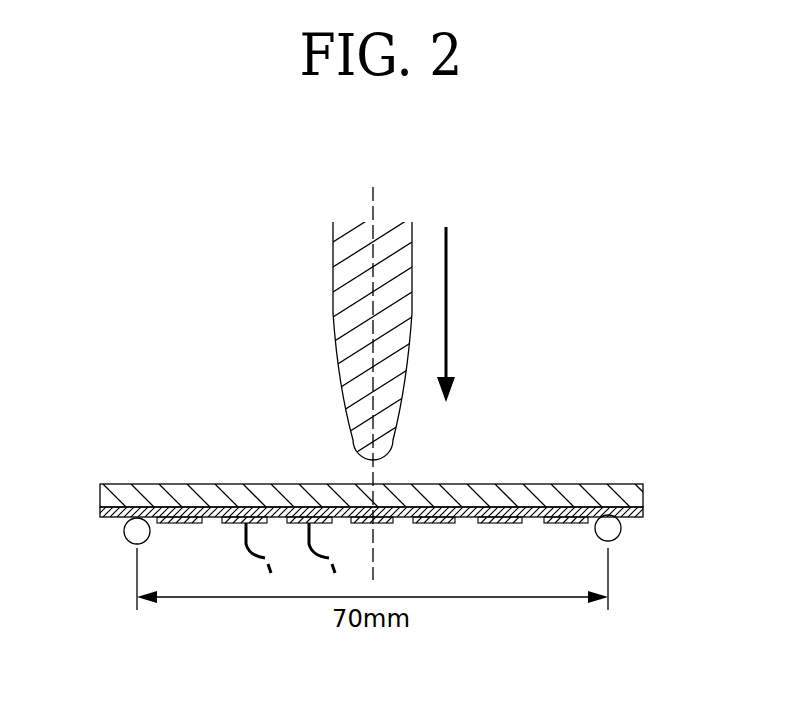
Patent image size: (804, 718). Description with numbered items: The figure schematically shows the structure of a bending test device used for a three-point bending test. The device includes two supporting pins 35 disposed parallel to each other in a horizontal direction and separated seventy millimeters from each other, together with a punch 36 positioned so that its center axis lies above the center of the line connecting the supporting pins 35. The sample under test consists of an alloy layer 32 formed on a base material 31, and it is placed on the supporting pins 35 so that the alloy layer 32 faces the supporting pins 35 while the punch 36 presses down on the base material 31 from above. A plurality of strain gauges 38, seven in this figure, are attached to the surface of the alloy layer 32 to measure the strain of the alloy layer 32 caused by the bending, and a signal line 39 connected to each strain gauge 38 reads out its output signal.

The base material 31 is at (640, 492).
The alloy layer 32 is at (645, 511).
The supporting pins 35 is at (137, 532).
The punch 36 is at (343, 305).
The strain gauges 38 is at (178, 523).
The signal line 39 is at (316, 548).